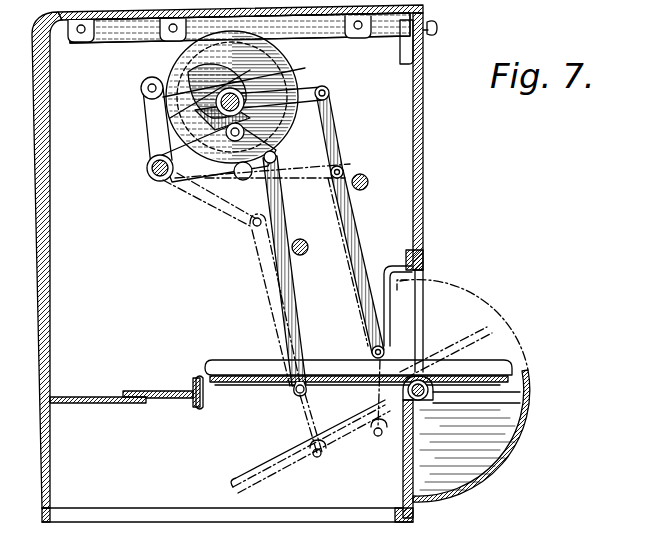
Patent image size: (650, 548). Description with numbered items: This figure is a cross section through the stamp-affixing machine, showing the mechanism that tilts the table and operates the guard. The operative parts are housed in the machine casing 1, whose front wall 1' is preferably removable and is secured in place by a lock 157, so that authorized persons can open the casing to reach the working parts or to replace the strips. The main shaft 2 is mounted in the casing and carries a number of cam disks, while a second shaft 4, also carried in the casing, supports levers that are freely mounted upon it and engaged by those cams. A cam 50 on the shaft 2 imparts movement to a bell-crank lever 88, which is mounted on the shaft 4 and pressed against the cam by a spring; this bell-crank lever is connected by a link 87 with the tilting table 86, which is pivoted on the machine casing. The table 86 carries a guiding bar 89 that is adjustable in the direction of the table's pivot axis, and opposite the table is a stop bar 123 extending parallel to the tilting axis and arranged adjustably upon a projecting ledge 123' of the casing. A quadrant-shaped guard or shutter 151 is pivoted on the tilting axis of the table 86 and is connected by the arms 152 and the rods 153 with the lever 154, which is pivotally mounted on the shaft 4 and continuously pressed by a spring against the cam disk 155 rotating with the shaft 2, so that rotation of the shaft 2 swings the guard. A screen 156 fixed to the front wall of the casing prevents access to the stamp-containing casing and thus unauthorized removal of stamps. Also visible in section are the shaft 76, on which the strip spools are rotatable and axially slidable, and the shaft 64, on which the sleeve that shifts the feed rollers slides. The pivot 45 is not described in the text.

The machine casing 1 is at (227, 263).
The front wall 1' is at (400, 301).
The shaft 2 is at (288, 92).
The shaft 4 is at (150, 171).
The pivot 45 is at (425, 402).
The cam 50 is at (188, 66).
The shaft 64 is at (306, 252).
The shaft 76 is at (366, 177).
The tilting table 86 is at (353, 382).
The link 87 is at (272, 234).
The bell-crank lever 88 is at (170, 124).
The guiding bar 89 is at (230, 366).
The stop bar 123 is at (163, 389).
The projecting ledge 123' is at (98, 388).
The quadrant-shaped guard 151 is at (487, 310).
The arms 152 is at (390, 356).
The rods 153 is at (340, 150).
The lever 154 is at (206, 200).
The cam disk 155 is at (287, 63).
The screen 156 is at (400, 276).
The lock 157 is at (405, 44).